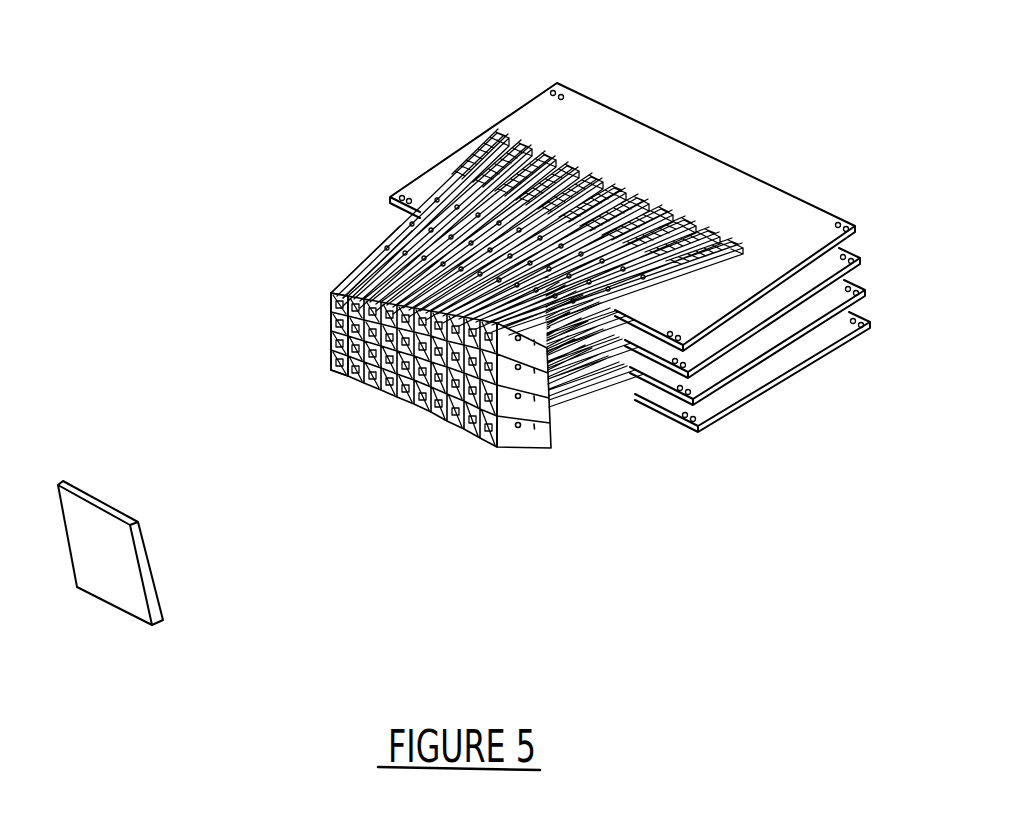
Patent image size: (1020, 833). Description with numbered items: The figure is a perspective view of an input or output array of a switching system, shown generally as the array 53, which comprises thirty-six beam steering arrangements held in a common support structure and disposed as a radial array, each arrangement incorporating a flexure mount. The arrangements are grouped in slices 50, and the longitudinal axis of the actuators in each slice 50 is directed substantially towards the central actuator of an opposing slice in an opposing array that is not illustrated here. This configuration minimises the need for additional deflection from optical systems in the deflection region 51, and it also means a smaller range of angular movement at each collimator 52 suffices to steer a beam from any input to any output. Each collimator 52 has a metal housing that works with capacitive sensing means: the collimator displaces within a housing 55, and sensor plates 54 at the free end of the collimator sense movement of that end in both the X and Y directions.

The slice 50 is at (805, 222).
The deflection region 51 is at (170, 430).
The collimator 52 is at (342, 297).
The array 53 is at (417, 124).
The sensor plates 54 is at (328, 302).
The housings 55 is at (347, 284).